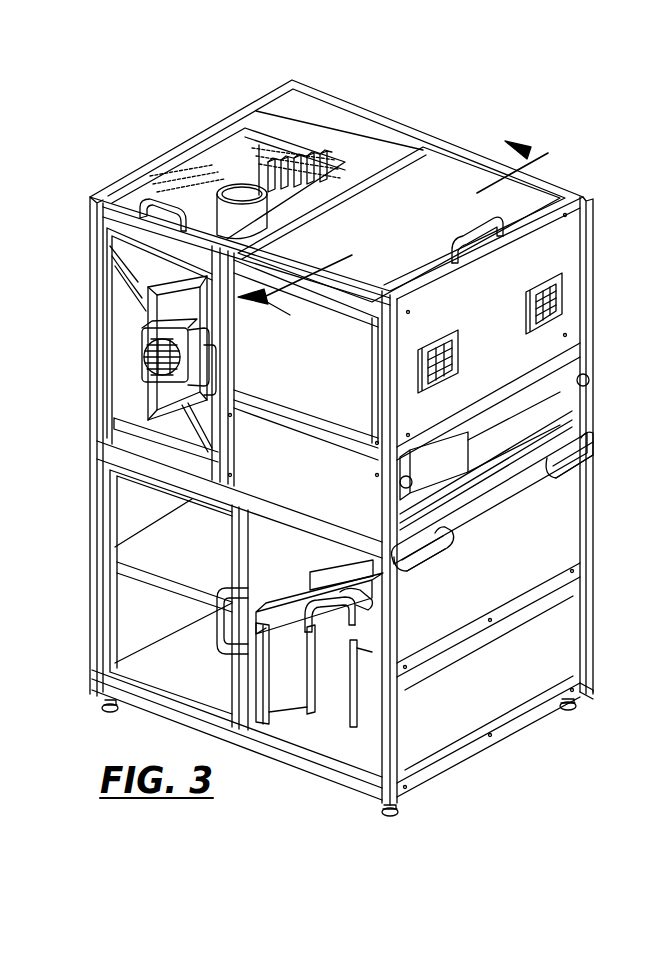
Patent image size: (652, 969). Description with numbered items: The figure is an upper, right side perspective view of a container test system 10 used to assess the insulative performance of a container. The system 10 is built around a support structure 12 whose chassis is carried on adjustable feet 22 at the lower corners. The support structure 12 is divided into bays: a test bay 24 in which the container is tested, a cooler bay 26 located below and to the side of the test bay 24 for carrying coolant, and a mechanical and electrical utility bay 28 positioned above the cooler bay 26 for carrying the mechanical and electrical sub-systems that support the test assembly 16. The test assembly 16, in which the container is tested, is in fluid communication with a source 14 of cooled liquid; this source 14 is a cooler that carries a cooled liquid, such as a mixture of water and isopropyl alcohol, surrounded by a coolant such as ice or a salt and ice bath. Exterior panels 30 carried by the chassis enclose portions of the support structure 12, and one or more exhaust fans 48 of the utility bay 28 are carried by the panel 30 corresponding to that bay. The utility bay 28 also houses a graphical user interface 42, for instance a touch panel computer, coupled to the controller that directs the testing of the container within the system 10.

The container test system 10 is at (151, 112).
The support structure 12 is at (290, 80).
The source of cooled liquid 14 is at (306, 712).
The test assembly 16 is at (141, 313).
The adjustable feet 22 is at (106, 706).
The test bay 24 is at (354, 117).
The cooler bay 26 is at (366, 759).
The mechanical and electrical utility bay 28 is at (540, 398).
The exterior panels 30 is at (508, 307).
The graphical user interface 42 is at (318, 382).
The exhaust fans 48 is at (531, 331).